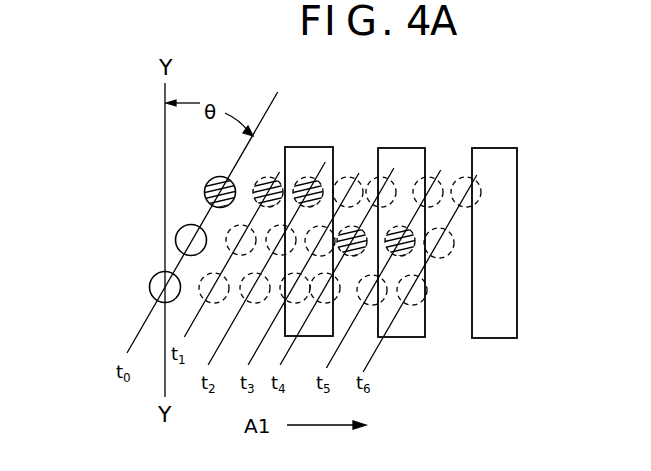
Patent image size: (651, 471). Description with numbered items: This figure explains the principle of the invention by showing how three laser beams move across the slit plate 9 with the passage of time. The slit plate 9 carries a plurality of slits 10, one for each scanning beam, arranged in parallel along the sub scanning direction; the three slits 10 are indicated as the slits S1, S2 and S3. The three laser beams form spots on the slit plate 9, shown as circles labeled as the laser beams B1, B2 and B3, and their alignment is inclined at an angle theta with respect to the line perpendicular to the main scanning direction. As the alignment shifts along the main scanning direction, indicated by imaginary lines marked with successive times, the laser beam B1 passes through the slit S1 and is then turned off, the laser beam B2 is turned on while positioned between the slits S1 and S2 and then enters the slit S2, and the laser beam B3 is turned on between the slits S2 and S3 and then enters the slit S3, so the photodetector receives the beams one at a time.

The slit plate 9 is at (401, 233).
The slits 10 is at (401, 216).
The slit S1 is at (309, 228).
The slit S2 is at (401, 229).
The slit S3 is at (494, 229).
The laser beam B1 is at (204, 194).
The laser beam B2 is at (172, 239).
The laser beam B3 is at (152, 289).